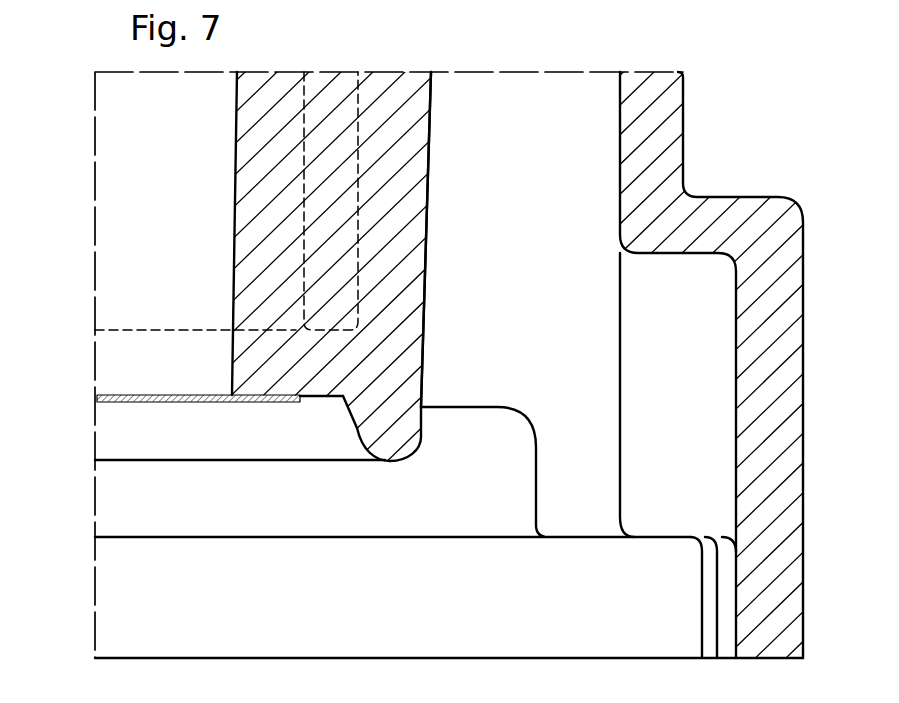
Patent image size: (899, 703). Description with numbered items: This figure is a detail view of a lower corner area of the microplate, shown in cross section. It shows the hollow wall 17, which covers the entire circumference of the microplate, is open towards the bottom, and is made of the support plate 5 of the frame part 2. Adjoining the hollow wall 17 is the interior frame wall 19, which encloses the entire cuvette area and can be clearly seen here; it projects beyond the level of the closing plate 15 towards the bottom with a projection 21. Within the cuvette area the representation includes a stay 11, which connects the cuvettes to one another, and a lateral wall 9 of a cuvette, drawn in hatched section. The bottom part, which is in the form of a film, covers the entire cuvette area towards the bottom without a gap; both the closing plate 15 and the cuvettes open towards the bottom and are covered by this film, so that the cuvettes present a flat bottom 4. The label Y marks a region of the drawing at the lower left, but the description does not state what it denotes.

The frame part 2 is at (773, 342).
The flat bottom 4 is at (128, 401).
The support plate 5 is at (682, 223).
The lateral wall 9 is at (275, 103).
The stay 11 is at (337, 103).
The closing plate 15 is at (230, 397).
The hollow wall 17 is at (547, 177).
The interior frame wall 19 is at (413, 177).
The projection 21 is at (395, 438).
The axis direction Y is at (420, 597).